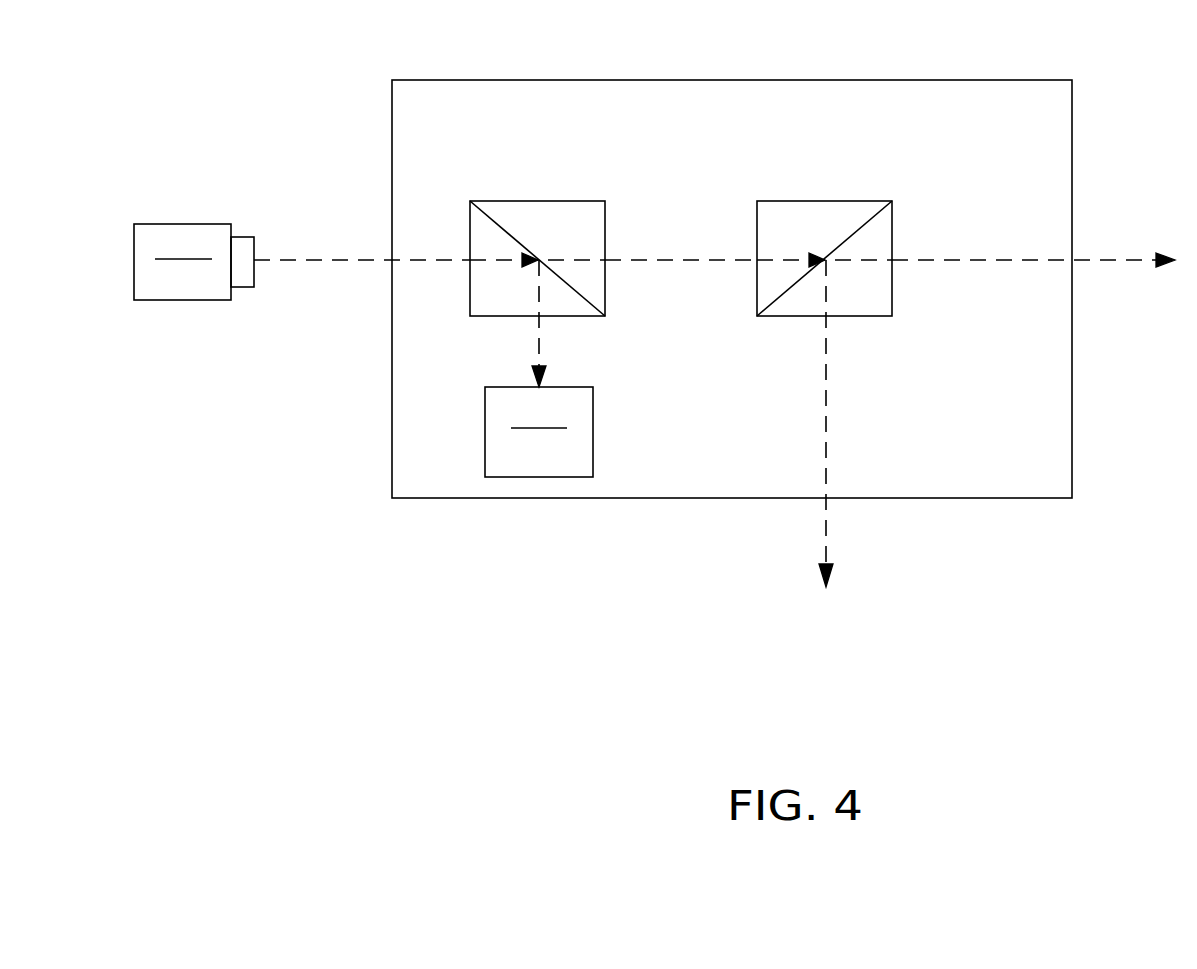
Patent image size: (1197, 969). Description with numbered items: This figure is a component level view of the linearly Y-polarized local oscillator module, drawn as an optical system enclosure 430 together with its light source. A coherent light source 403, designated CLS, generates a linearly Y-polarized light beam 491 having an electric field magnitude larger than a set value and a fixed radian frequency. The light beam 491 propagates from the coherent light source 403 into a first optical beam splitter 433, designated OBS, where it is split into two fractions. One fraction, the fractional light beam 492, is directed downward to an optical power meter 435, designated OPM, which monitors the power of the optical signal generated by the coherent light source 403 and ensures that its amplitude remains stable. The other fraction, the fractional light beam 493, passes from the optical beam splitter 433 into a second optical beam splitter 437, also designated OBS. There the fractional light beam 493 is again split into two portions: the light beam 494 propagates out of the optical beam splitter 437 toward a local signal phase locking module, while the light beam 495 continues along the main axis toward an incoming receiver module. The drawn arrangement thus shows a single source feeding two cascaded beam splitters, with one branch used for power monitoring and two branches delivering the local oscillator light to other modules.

The optical system (O S) 430 is at (508, 80).
The coherent light source 403 is at (194, 262).
The optical beam splitter 433 is at (540, 201).
The optical beam splitter 437 is at (820, 201).
The optical power meter 435 is at (539, 432).
The light beam 491 is at (283, 263).
The fractional light beam 492 is at (539, 347).
The fractional light beam 493 is at (647, 258).
The light beam 494 is at (826, 403).
The light beam 495 is at (947, 259).